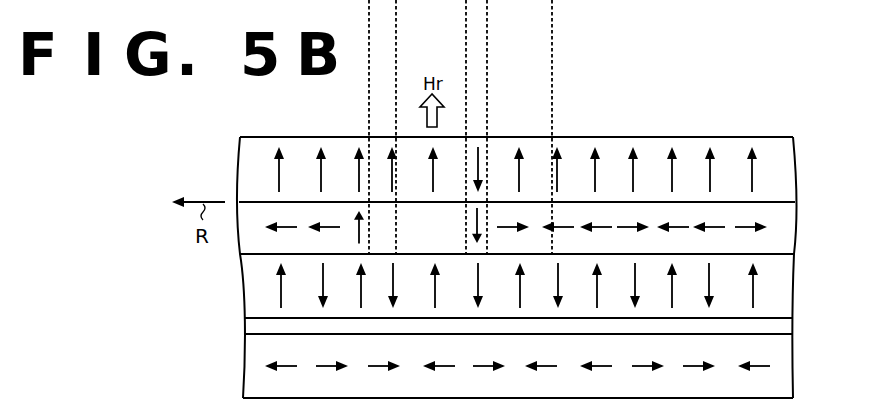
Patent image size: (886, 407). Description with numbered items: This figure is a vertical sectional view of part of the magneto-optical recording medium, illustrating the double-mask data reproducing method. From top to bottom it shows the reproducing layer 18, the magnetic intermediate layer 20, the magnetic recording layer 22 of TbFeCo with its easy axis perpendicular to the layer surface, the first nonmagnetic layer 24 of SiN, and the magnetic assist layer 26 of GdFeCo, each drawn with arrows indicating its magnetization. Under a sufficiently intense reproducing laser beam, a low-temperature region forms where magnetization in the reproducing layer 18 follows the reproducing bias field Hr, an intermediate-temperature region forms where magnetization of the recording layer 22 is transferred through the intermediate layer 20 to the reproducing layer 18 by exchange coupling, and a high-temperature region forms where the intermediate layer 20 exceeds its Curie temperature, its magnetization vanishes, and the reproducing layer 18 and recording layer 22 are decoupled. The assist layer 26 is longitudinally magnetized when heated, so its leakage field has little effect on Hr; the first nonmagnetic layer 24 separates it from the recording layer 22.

The reproducing layer 18 is at (783, 165).
The magnetic intermediate layer 20 is at (783, 227).
The magnetic recording layer 22 is at (783, 283).
The first nonmagnetic layer 24 is at (783, 322).
The magnetic assist layer 26 is at (783, 361).